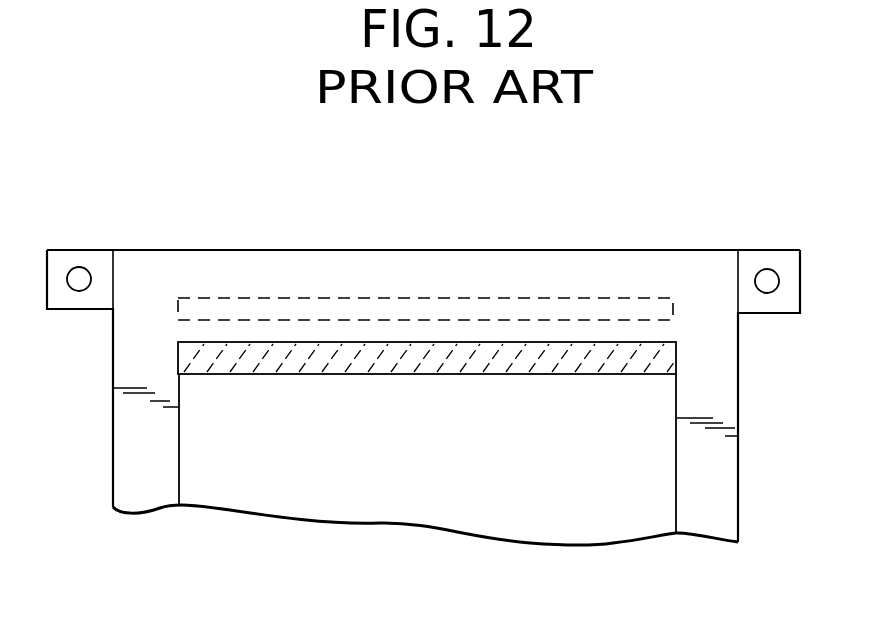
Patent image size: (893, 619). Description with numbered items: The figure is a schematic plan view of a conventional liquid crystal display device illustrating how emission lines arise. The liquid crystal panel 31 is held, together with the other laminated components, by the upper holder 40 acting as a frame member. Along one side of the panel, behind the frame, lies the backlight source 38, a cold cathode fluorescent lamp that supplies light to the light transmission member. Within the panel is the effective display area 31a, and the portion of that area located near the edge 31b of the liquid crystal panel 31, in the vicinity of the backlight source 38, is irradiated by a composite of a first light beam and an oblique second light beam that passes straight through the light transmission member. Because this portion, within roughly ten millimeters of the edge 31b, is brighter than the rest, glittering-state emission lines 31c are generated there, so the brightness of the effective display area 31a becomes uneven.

The liquid crystal panel 31 is at (341, 437).
The effective display area 31a is at (645, 403).
The edge 31b is at (497, 352).
The emission lines 31c is at (407, 358).
The backlight source 38 is at (320, 305).
The upper holder 40 is at (698, 308).